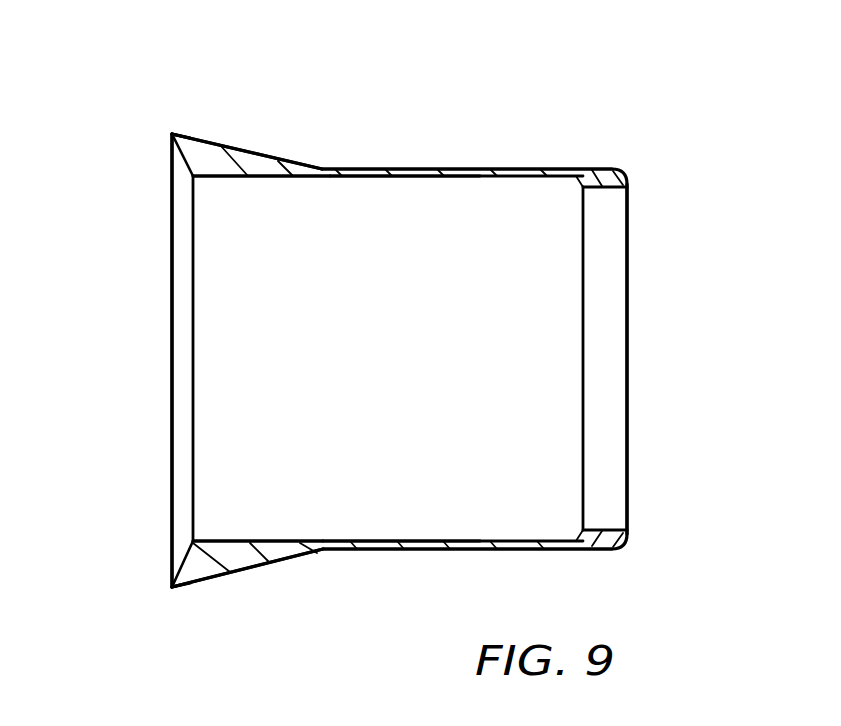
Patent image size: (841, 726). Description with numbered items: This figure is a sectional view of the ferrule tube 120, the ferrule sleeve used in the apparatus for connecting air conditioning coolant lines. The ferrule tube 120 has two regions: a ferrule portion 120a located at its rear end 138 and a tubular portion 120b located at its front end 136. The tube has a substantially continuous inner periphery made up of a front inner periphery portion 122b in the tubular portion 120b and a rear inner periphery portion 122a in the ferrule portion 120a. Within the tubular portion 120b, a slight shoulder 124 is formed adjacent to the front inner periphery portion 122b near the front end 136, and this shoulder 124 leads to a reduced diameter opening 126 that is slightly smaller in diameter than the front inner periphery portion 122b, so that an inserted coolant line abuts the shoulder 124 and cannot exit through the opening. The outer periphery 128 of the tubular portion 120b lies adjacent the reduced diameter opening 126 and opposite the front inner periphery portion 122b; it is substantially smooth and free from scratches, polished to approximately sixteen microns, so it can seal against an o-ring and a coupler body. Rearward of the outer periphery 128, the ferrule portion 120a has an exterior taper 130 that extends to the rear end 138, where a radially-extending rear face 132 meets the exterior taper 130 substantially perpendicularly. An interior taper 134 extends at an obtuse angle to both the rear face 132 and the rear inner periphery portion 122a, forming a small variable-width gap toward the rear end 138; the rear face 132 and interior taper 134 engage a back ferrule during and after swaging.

The ferrule tube 120 is at (648, 118).
The ferrule portion 120a is at (172, 112).
The tubular portion 120b is at (626, 166).
The rear inner periphery portion 122a is at (232, 178).
The front inner periphery portion 122b is at (412, 178).
The shoulder 124 is at (580, 180).
The reduced diameter opening 126 is at (606, 190).
The outer periphery 128 is at (397, 168).
The exterior taper 130 is at (195, 136).
The rear face 132 is at (170, 143).
The interior taper 134 is at (183, 172).
The front end 136 is at (608, 366).
The rear end 138 is at (177, 385).